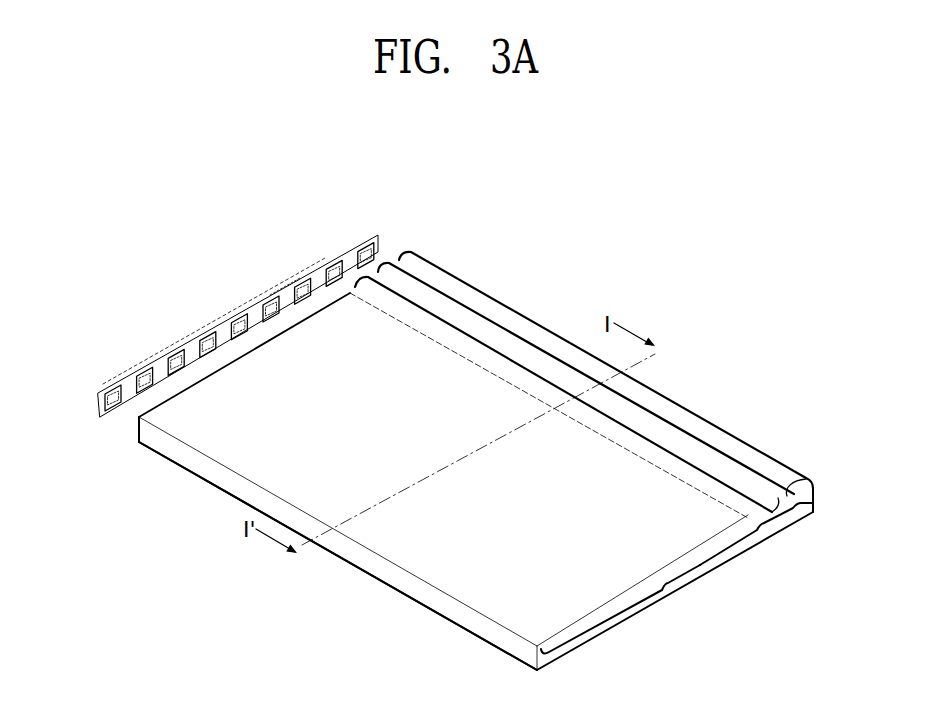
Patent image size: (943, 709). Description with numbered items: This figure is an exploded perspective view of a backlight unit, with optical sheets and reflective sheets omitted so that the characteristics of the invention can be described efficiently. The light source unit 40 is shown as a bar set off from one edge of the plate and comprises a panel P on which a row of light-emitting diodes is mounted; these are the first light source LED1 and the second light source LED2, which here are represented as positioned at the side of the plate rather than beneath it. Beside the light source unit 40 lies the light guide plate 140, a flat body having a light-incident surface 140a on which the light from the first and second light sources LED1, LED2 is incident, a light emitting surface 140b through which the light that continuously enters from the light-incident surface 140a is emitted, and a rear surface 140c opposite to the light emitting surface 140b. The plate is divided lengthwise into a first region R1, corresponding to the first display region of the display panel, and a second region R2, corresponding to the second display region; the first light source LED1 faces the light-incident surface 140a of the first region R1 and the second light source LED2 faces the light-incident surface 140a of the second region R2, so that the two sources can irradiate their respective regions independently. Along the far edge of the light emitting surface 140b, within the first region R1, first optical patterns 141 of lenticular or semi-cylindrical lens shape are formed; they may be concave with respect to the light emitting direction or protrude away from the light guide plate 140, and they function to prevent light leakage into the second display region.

The light source unit 40 is at (343, 194).
The first light source LED1 is at (323, 260).
The second light source LED2 is at (205, 311).
The panel P is at (305, 263).
The light guide plate 140 is at (197, 438).
The light-incident surface 140a is at (137, 428).
The light emitting surface 140b is at (800, 476).
The rear surface 140c is at (397, 590).
The first optical patterns 141 is at (635, 440).
The first region R1 is at (767, 534).
The second region R2 is at (622, 609).